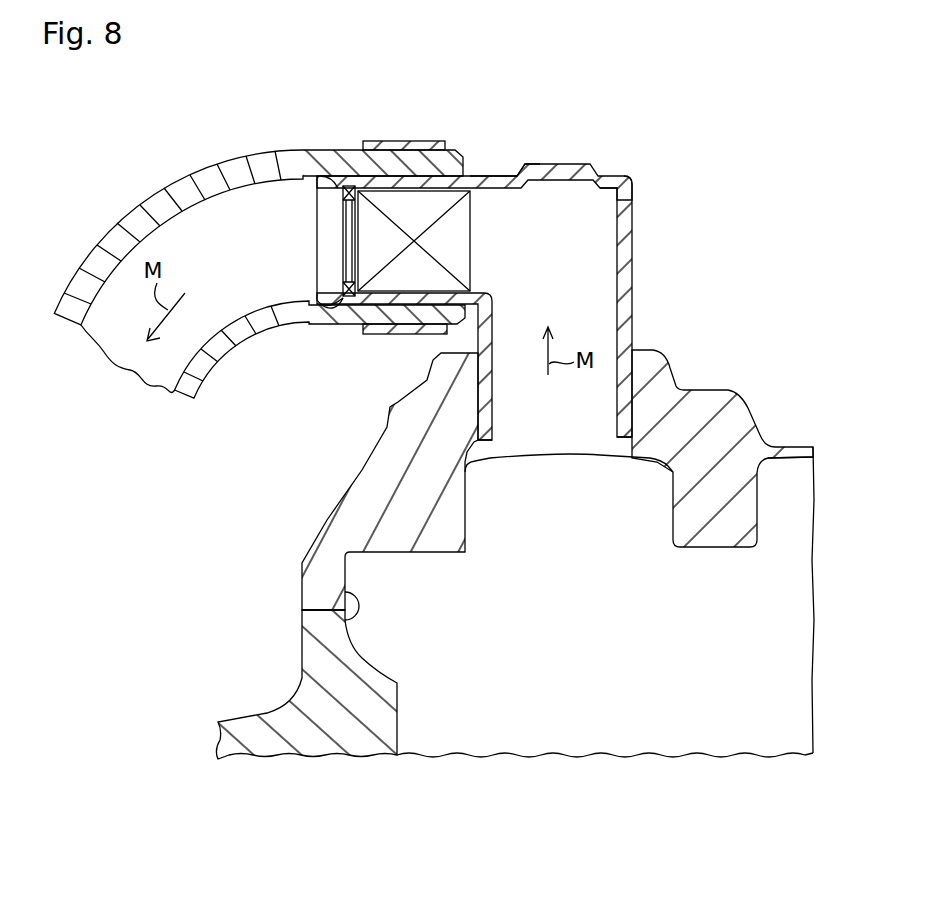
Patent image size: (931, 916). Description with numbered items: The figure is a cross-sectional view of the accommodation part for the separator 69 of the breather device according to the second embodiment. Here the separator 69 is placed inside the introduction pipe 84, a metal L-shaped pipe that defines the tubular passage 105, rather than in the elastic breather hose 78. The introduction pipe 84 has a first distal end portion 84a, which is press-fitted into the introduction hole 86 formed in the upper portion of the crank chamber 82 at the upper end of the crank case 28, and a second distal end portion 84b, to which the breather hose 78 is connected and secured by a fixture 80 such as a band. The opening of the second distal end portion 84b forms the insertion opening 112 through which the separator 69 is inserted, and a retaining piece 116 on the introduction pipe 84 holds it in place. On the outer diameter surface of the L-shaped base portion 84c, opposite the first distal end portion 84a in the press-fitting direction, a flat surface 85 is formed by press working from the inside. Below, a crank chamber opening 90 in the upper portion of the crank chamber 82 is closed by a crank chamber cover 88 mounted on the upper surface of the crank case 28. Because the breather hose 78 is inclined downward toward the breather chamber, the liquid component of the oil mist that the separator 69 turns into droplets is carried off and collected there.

The crank case 28 is at (278, 754).
The separator 69 is at (474, 246).
The breather hose 78 is at (168, 194).
The fixture 80 is at (383, 335).
The crank chamber 82 is at (553, 648).
The introduction pipe 84 is at (520, 269).
The first distal end portion 84a is at (475, 416).
The second distal end portion 84b is at (342, 150).
The L-shaped base portion 84c is at (634, 180).
The flat surface 85 is at (562, 163).
The introduction hole 86 is at (618, 445).
The crank chamber cover 88 is at (727, 393).
The crank chamber opening 90 is at (352, 598).
The tubular passage 105 is at (482, 195).
The insertion opening 112 is at (317, 233).
The retaining piece 116 is at (337, 327).